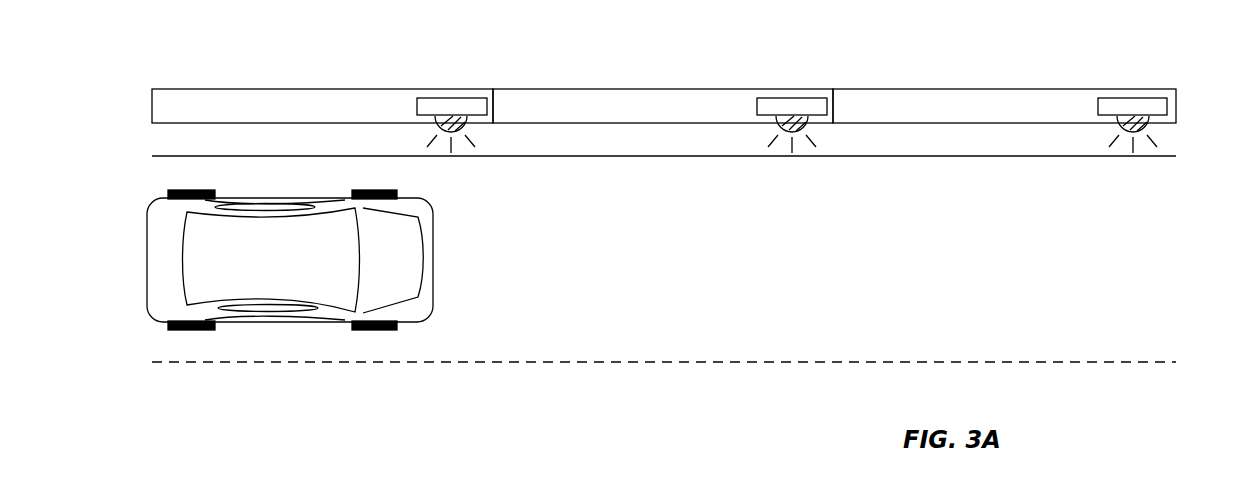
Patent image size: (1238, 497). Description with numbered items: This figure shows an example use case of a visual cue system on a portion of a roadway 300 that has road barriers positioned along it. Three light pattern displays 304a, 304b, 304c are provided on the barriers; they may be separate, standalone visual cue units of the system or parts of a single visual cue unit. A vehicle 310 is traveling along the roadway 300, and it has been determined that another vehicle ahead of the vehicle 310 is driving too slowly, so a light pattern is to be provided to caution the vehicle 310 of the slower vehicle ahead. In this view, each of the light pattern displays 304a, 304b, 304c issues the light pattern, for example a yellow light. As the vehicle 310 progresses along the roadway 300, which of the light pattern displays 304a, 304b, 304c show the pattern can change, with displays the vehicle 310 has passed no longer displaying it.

The roadway 300 is at (1111, 259).
The light pattern display 304a is at (447, 98).
The light pattern display 304b is at (782, 98).
The light pattern display 304c is at (1115, 98).
The vehicle 310 is at (147, 261).